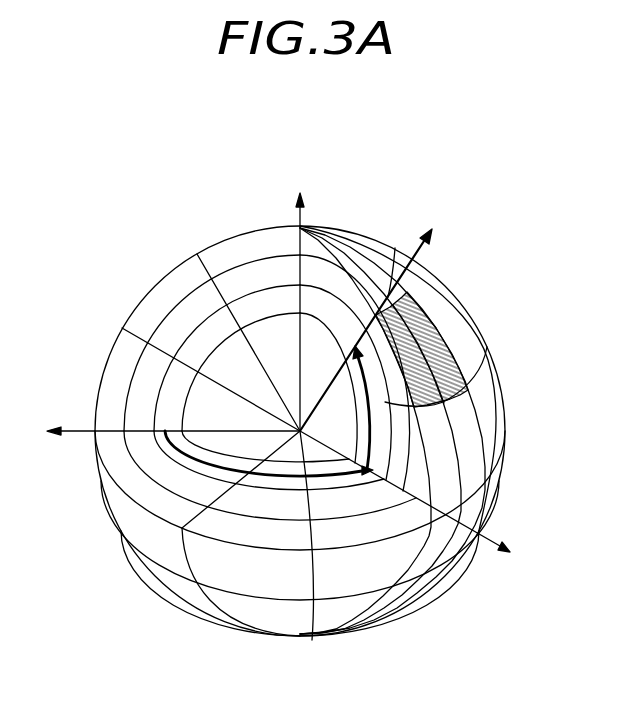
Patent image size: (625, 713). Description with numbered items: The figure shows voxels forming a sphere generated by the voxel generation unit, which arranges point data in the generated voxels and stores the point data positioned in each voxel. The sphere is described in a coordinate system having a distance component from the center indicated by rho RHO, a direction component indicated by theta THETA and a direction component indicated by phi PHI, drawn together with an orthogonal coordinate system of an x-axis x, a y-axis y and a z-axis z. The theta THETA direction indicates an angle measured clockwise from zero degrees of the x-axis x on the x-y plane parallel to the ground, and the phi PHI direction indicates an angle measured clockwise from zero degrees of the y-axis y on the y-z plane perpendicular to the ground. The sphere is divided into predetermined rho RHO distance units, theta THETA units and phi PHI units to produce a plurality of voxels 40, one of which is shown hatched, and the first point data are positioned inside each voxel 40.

The voxel 40 is at (418, 314).
The rho RHO is at (386, 317).
The phi PHI is at (374, 402).
The theta THETA is at (245, 478).
The x-axis x is at (166, 430).
The y-axis y is at (413, 497).
The z-axis z is at (299, 297).